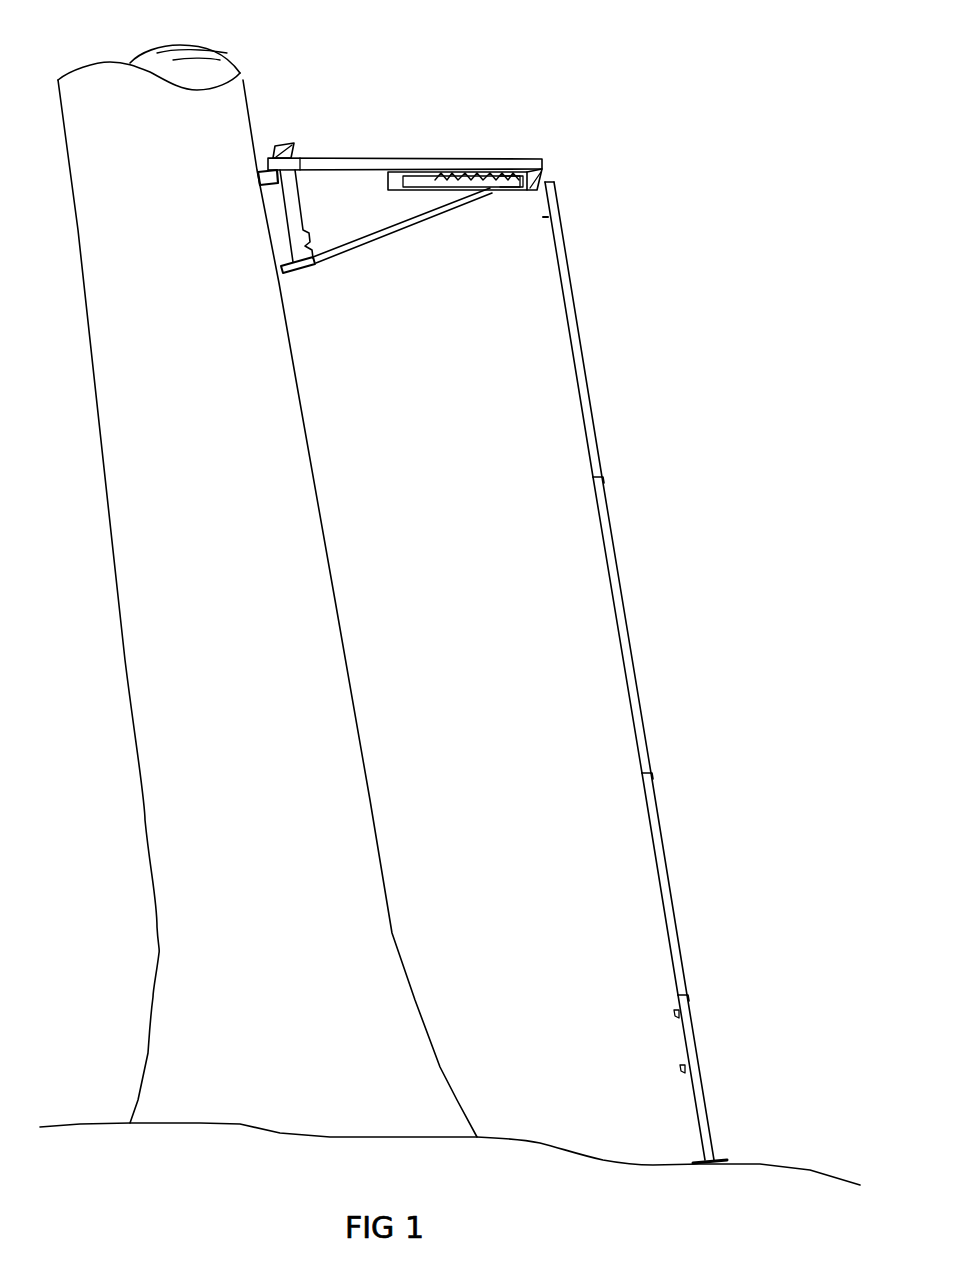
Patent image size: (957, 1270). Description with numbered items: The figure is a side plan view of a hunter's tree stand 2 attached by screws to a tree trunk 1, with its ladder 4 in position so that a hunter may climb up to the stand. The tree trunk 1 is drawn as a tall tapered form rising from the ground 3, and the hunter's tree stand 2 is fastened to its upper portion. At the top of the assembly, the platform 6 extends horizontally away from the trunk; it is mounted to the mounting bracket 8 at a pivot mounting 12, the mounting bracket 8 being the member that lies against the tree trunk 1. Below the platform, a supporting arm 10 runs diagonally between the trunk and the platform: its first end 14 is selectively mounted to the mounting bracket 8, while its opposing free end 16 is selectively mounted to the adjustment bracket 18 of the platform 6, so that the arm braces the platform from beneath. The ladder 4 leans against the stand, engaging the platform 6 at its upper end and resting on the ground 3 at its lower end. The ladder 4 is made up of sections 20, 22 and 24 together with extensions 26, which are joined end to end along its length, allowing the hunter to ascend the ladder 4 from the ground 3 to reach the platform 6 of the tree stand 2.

The tree trunk 1 is at (313, 605).
The hunter's tree stand 2 is at (393, 142).
The ground 3 is at (812, 1168).
The ladder 4 is at (685, 672).
The platform 6 is at (465, 159).
The mounting bracket 8 is at (305, 222).
The supporting arm 10 is at (375, 225).
The pivot mounting 12 is at (292, 145).
The first end 14 is at (313, 262).
The free end 16 is at (470, 193).
The adjustment bracket 18 is at (508, 193).
The ladder section 20 is at (583, 347).
The ladder section 22 is at (630, 600).
The ladder section 24 is at (672, 890).
The extensions 26 is at (705, 1087).